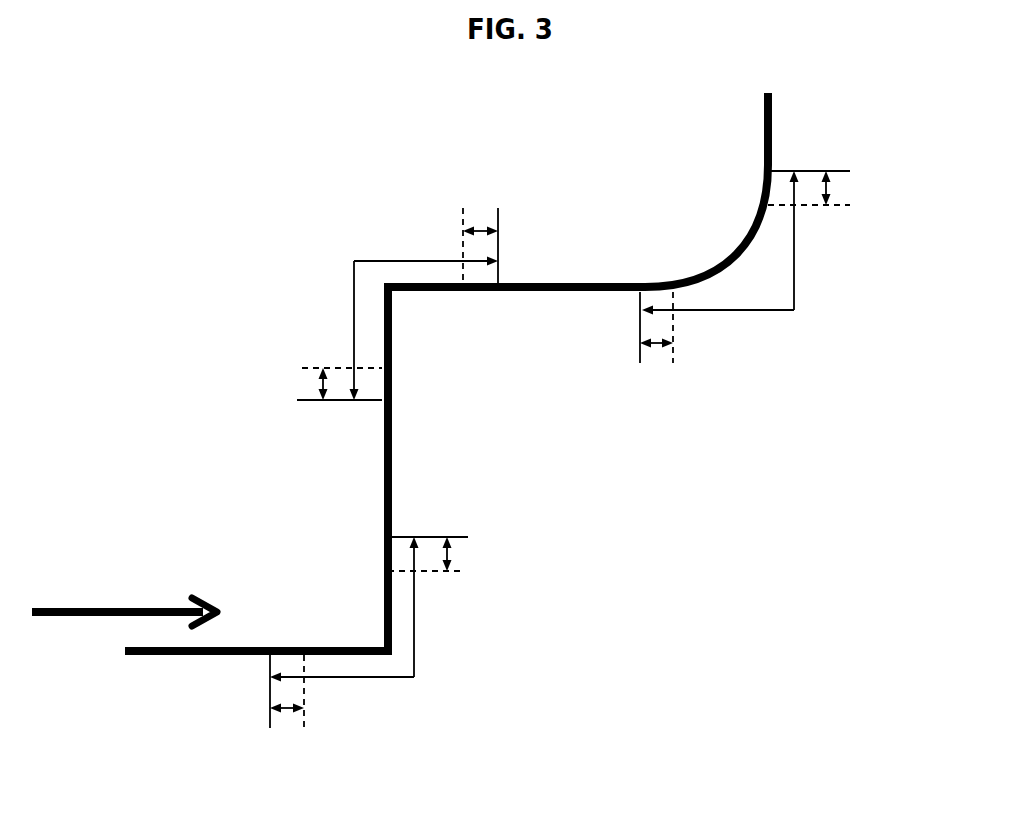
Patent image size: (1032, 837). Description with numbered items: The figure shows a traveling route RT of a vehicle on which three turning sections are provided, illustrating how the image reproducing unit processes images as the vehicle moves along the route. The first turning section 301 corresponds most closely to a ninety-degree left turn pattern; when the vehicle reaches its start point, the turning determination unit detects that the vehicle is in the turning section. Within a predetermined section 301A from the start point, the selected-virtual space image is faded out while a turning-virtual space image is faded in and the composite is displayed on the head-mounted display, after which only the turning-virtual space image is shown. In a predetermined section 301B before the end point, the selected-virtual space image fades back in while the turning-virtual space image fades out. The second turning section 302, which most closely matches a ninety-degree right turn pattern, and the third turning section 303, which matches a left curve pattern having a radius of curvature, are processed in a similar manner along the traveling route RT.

The first turning section 301 is at (417, 632).
The predetermined section from the start point of the turning section 301A is at (288, 720).
The predetermined section before the end point of the turning section 301B is at (457, 551).
The second turning section 302 is at (354, 305).
The third turning section 303 is at (794, 268).
The traveling route RT is at (247, 646).